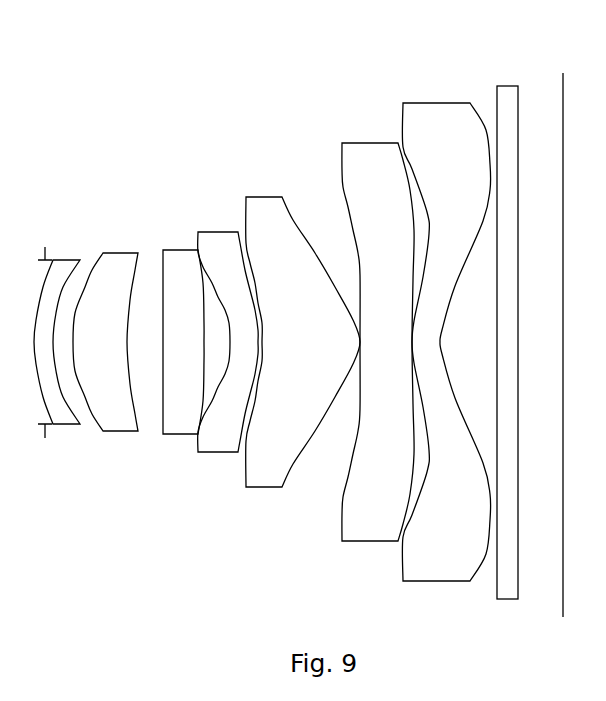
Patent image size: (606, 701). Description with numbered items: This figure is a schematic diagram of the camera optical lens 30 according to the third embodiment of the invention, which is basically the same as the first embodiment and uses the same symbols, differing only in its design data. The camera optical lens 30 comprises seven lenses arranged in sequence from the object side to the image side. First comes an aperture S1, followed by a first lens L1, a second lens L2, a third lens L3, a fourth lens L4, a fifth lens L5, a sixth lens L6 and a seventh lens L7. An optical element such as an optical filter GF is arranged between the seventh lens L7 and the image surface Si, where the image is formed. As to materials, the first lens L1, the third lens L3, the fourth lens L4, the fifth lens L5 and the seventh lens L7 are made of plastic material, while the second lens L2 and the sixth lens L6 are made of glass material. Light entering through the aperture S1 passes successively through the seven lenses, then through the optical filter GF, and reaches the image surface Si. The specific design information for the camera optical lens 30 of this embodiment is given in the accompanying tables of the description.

The camera optical lens 30 is at (366, 72).
The aperture S1 is at (39, 338).
The first lens L1 is at (57, 331).
The second lens L2 is at (105, 332).
The third lens L3 is at (183, 334).
The fourth lens L4 is at (228, 333).
The fifth lens L5 is at (303, 332).
The sixth lens L6 is at (378, 334).
The seventh lens L7 is at (446, 333).
The optical filter GF is at (508, 332).
The image surface Si is at (562, 336).